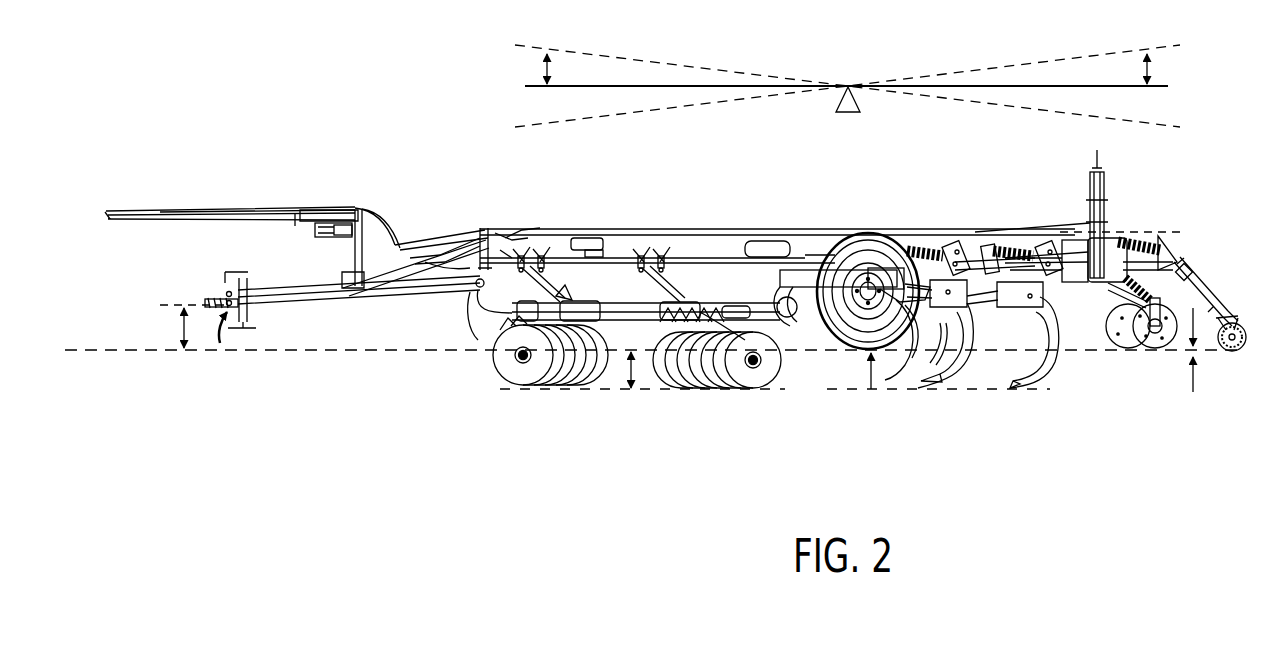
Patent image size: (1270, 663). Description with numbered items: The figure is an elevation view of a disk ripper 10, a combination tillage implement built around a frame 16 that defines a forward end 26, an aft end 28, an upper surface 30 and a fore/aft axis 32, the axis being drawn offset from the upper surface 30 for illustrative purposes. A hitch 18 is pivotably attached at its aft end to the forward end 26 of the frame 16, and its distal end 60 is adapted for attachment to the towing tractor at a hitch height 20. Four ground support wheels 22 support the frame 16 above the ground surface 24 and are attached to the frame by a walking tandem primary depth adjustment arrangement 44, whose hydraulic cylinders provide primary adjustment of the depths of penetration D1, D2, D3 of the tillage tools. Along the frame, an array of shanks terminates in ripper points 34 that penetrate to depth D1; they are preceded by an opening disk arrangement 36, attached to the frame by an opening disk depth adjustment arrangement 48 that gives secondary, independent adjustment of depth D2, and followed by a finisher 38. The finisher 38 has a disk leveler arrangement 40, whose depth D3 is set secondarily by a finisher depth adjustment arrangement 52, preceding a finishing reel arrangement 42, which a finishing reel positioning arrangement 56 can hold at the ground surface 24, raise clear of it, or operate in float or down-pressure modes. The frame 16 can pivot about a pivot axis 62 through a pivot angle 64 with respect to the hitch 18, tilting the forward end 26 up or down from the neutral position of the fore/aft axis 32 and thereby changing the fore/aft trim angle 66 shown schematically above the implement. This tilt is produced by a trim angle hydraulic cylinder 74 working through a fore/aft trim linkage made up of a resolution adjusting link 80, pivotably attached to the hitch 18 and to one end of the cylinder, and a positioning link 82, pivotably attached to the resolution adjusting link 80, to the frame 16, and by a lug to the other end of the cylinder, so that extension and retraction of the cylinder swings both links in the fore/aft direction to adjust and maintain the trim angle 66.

The disk ripper 10 is at (958, 210).
The frame 16 is at (412, 208).
The hitch 18 is at (280, 288).
The hitch height 20 is at (177, 327).
The ground support wheels 22 is at (848, 258).
The ground surface 24 is at (297, 348).
The forward end 26 is at (488, 292).
The aft end 28 is at (1113, 231).
The upper surface 30 is at (662, 230).
The fore/aft axis 32 is at (1021, 88).
The ripper points 34 is at (989, 363).
The opening disk arrangement 36 is at (692, 412).
The finisher 38 is at (1198, 250).
The disk leveler arrangement 40 is at (1139, 367).
The finishing reel arrangement 42 is at (1231, 363).
The walking tandem primary depth adjustment arrangement 44 is at (808, 324).
The opening disk depth adjustment arrangement 48 is at (600, 284).
The finisher depth adjustment arrangement 52 is at (1097, 305).
The finishing reel positioning arrangement 56 is at (1200, 283).
The distal end 60 is at (212, 302).
The pivot axis 62 is at (472, 346).
The pivot angle 64 is at (453, 255).
The fore/aft trim angle 66 is at (545, 70).
The trim angle hydraulic cylinder 74 is at (330, 212).
The resolution adjusting link 80 is at (360, 242).
The positioning link 82 is at (382, 302).
The depth of penetration of ripper points D1 is at (871, 365).
The depth of penetration of opening disk arrangement D2 is at (628, 370).
The depth of penetration of disk leveler arrangement D3 is at (1193, 380).